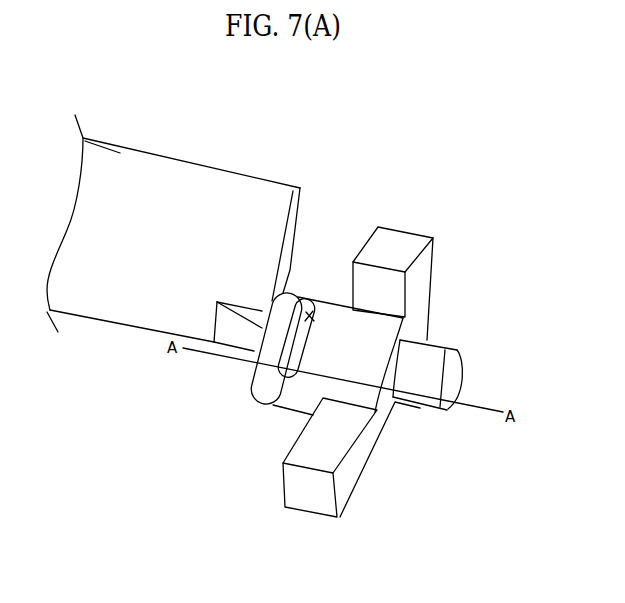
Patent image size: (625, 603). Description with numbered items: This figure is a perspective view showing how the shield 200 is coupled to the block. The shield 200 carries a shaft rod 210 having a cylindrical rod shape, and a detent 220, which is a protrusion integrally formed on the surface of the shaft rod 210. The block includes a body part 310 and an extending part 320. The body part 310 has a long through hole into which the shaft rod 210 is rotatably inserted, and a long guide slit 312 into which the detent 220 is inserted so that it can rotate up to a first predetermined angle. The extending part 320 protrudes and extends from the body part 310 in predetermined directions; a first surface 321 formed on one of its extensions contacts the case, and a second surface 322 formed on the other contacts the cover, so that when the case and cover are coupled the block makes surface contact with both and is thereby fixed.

The shield 200 is at (157, 194).
The shaft rod 210 is at (430, 357).
The detent 220 is at (273, 405).
The body part 310 is at (252, 394).
The guide slit 312 is at (300, 292).
The extending part 320 is at (356, 465).
The first surface 321 is at (392, 248).
The second surface 322 is at (312, 495).